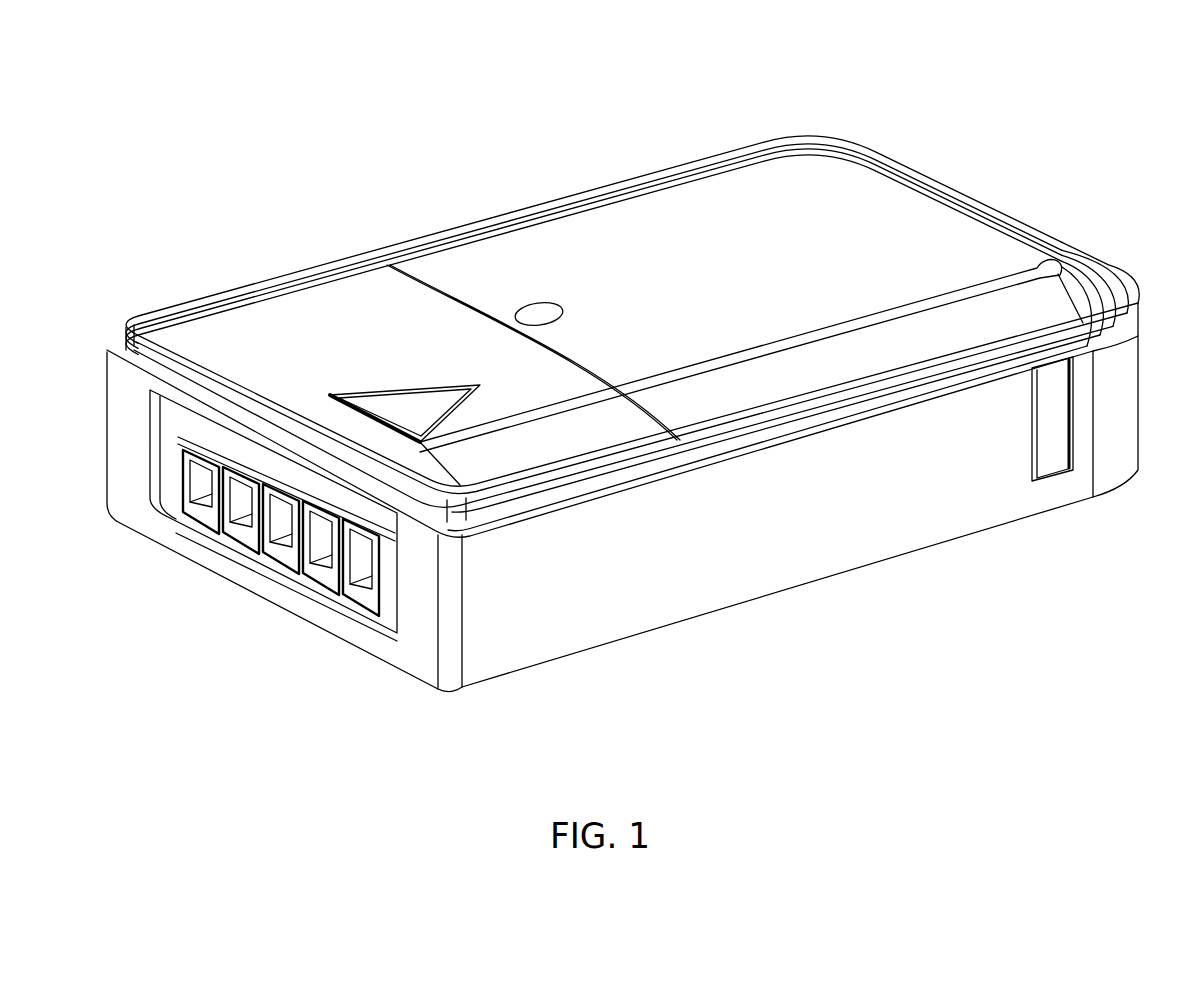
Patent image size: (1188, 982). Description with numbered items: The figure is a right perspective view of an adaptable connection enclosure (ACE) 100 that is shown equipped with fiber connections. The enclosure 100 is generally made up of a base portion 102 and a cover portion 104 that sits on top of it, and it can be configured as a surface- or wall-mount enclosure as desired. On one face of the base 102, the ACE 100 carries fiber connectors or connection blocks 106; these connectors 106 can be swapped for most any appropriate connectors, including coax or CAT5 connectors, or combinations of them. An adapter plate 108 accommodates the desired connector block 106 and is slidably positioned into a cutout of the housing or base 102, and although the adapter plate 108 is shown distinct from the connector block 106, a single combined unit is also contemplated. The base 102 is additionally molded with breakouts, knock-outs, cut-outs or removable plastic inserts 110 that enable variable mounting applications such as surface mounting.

The adaptable connection enclosure (ACE) 100 is at (1113, 100).
The base portion 102 is at (790, 528).
The cover portion 104 is at (720, 285).
The fiber connectors (connection blocks) 106 is at (372, 662).
The adapter plate 108 is at (170, 467).
The removable inserts (breakouts, knock-outs, cut-outs) 110 is at (1030, 448).